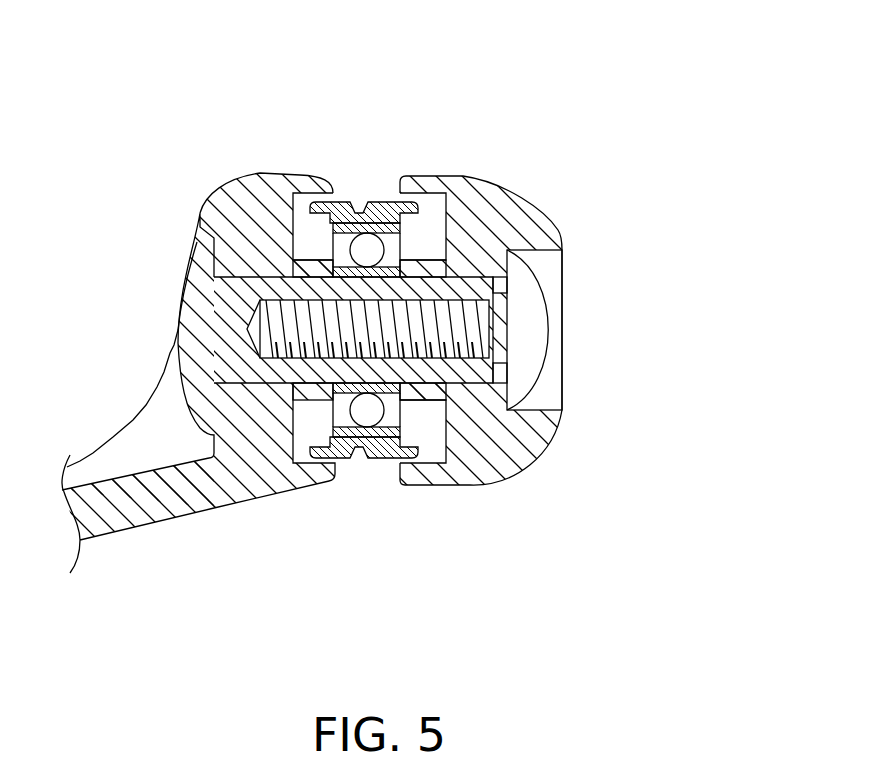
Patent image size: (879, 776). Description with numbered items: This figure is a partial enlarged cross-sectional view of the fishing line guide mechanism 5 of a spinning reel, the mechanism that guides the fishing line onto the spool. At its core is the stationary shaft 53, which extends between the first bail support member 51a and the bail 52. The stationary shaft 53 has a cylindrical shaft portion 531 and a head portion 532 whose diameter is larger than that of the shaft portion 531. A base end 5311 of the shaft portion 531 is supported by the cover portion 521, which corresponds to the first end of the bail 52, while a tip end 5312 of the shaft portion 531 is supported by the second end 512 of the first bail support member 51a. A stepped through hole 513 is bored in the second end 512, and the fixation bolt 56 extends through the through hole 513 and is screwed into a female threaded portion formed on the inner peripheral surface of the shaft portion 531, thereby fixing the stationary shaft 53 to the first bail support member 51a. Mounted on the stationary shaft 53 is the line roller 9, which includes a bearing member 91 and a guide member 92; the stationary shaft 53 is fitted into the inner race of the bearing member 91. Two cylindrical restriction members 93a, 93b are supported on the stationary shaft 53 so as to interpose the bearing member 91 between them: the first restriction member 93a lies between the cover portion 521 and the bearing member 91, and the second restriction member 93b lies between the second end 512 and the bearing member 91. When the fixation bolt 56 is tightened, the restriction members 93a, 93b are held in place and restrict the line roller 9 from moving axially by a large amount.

The fishing line guide mechanism 5 is at (532, 110).
The line roller 9 is at (387, 265).
The bearing member 91 is at (408, 247).
The guide member 92 is at (343, 178).
The first restriction member 93a is at (302, 402).
The second restriction member 93b is at (435, 405).
The first bail support member 51a is at (533, 467).
The second end 512 is at (537, 443).
The stepped through hole 513 is at (548, 393).
The bail 52 is at (140, 537).
The cover portion 521 is at (268, 176).
The stationary shaft 53 is at (177, 321).
The shaft portion 531 is at (253, 268).
The base end 5311 is at (247, 373).
The tip end 5312 is at (478, 392).
The head portion 532 is at (183, 277).
The fixation bolt 56 is at (535, 328).